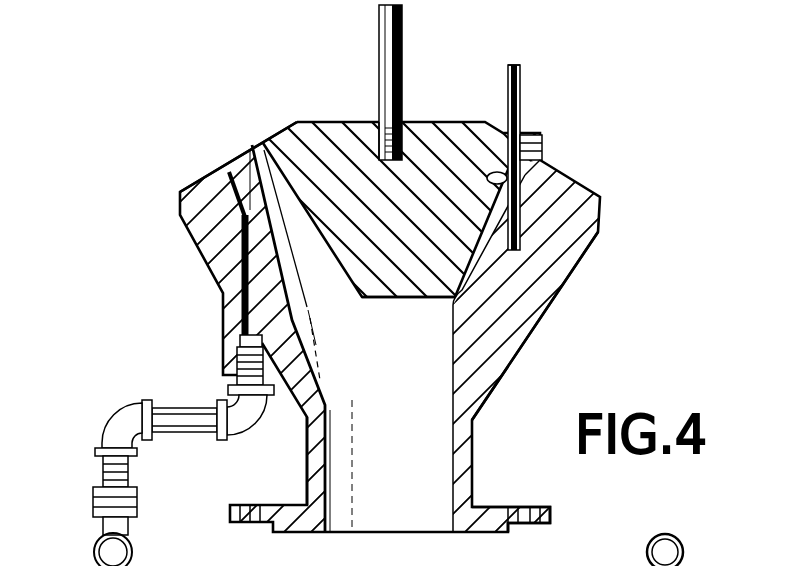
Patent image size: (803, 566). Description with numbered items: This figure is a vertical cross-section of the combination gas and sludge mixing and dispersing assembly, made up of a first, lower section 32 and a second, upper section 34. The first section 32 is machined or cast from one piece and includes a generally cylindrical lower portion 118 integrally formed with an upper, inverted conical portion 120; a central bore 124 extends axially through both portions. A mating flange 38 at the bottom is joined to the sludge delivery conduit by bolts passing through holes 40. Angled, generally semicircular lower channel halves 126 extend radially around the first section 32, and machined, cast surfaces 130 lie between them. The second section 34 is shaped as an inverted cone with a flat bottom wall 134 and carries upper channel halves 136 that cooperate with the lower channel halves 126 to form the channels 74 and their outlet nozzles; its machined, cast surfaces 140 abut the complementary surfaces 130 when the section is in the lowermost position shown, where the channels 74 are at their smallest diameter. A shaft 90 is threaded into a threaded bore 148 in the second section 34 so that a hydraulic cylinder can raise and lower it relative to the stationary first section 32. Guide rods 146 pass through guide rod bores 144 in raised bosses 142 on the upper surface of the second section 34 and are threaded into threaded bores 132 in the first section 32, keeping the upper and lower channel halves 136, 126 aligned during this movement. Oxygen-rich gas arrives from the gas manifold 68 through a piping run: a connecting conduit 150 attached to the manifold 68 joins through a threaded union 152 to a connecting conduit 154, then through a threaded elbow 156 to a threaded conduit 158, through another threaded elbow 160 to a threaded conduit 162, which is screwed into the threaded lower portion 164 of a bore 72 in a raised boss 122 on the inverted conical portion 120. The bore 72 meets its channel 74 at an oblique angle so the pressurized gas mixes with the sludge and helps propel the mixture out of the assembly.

The first, lower section 32 is at (573, 270).
The second, upper section 34 is at (363, 125).
The mating flange 38 is at (550, 513).
The holes 40 is at (255, 522).
The gas manifold 68 is at (133, 552).
The bore 72 is at (242, 303).
The channels 74 is at (240, 150).
The shaft 90 is at (402, 70).
The cylindrical lower portion 118 is at (308, 472).
The inverted conical portion 120 is at (195, 240).
The raised bosses 122 is at (238, 340).
The central bore 124 is at (411, 480).
The lower channel halves 126 is at (225, 165).
The machined, cast surfaces 130 is at (558, 290).
The threaded bores 132 is at (588, 215).
The bottom wall 134 is at (380, 300).
The upper channel halves 136 is at (262, 148).
The machined, cast surfaces 140 is at (545, 175).
The raised bosses 142 is at (520, 150).
The guide rod bores 144 is at (556, 200).
The guide rods 146 is at (520, 90).
The threaded bore 148 is at (402, 120).
The connecting conduit 150 is at (103, 526).
The threaded union 152 is at (95, 500).
The connecting conduit 154 is at (103, 470).
The threaded elbow 156 is at (112, 420).
The threaded conduit 158 is at (190, 432).
The threaded elbow 160 is at (255, 420).
The threaded conduit 162 is at (237, 368).
The threaded lower portion 164 is at (318, 345).